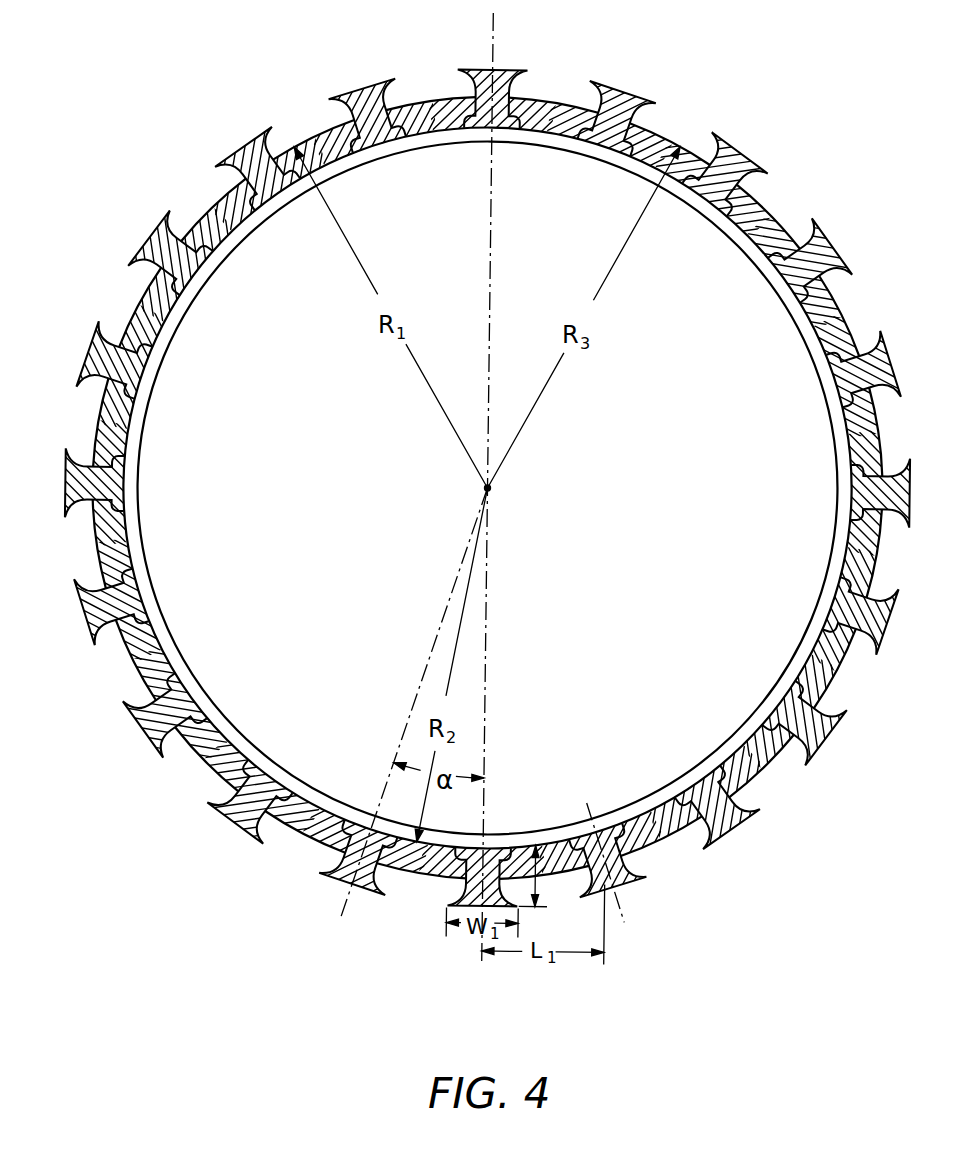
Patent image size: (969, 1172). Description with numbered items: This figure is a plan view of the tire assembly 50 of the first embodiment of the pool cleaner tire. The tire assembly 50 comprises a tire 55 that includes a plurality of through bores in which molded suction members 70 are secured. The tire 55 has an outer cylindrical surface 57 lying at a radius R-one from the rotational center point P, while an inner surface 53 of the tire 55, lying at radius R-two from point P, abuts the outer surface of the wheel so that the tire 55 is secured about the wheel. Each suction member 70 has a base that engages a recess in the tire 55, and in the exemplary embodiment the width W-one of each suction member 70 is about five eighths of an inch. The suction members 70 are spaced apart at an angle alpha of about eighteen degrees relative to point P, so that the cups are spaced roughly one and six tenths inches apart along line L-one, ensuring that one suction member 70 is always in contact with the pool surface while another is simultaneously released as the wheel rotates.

The tire assembly 50 is at (484, 542).
The inner surface 53 is at (423, 137).
The tire 55 is at (663, 147).
The outer cylindrical surface 57 is at (310, 137).
The suction member 70 is at (613, 90).